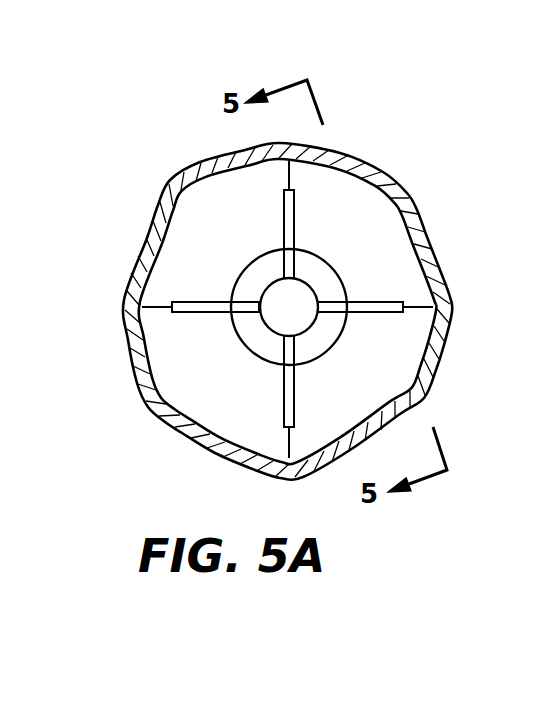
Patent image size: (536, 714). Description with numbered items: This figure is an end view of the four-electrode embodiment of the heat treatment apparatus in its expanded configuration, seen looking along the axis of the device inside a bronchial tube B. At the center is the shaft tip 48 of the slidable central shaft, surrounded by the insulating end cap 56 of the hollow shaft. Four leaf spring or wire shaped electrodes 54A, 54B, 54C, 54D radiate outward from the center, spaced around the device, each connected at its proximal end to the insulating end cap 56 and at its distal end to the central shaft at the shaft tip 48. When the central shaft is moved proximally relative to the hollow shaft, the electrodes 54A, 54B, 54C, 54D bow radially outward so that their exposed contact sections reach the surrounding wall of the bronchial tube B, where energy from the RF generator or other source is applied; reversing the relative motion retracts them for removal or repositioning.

The bronchial tube B is at (418, 223).
The insulating end cap 56 is at (260, 275).
The shaft tip 48 is at (293, 317).
The electrode 54A is at (367, 315).
The electrode 54B is at (287, 398).
The electrode 54C is at (198, 317).
The electrode 54D is at (295, 223).